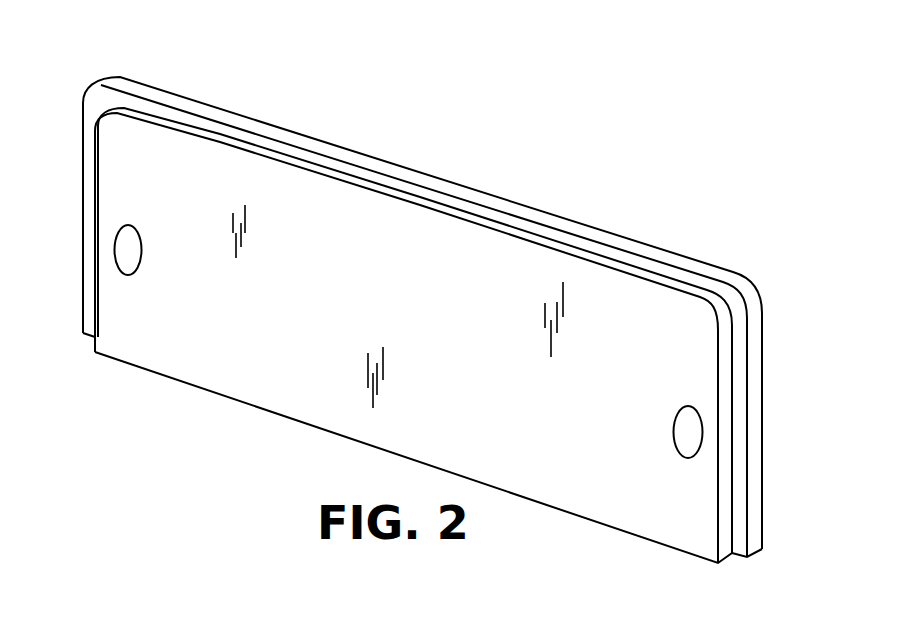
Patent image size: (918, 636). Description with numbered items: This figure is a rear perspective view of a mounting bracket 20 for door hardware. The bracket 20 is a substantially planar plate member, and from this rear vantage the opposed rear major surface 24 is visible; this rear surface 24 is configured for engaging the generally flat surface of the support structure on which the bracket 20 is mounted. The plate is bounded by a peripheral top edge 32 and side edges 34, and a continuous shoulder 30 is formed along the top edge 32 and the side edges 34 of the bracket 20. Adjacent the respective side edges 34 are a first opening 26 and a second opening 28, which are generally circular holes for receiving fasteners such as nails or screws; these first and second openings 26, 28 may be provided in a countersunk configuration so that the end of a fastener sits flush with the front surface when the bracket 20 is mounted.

The mounting bracket 20 is at (592, 209).
The rear major surface 24 is at (362, 232).
The first opening 26 is at (676, 433).
The second opening 28 is at (141, 247).
The continuous shoulder 30 is at (96, 342).
The top edge 32 is at (488, 198).
The side edges 34 is at (84, 121).